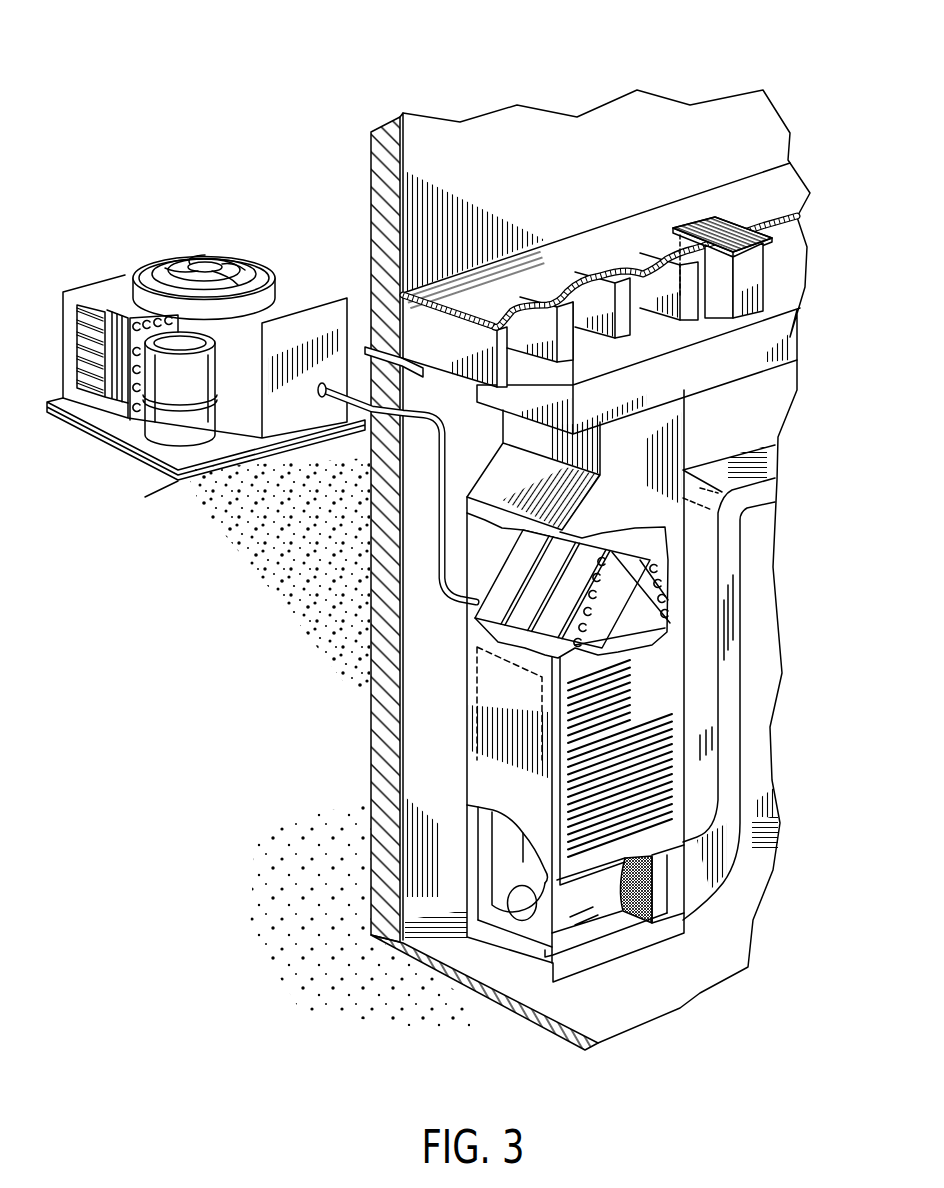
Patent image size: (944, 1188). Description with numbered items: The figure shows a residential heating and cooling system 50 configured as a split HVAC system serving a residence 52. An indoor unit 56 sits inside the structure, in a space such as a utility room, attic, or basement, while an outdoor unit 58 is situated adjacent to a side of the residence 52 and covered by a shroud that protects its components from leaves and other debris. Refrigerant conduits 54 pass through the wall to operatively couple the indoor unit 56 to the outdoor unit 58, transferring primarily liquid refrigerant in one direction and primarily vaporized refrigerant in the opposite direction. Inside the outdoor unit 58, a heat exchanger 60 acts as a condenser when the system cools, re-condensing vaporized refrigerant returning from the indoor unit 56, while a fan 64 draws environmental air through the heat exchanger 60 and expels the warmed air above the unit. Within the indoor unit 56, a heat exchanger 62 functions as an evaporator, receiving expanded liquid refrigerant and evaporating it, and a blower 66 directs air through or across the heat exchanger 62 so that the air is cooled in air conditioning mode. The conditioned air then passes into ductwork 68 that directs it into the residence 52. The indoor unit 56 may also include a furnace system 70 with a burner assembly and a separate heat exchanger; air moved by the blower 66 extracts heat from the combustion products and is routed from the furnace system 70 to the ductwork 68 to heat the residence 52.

The residential heating and cooling system 50 is at (203, 84).
The residence 52 is at (505, 135).
The refrigerant conduits 54 is at (437, 505).
The indoor unit 56 is at (467, 731).
The outdoor unit 58 is at (206, 322).
The heat exchanger 60 is at (138, 322).
The heat exchanger 62 is at (525, 622).
The fan 64 is at (222, 265).
The blower 66 is at (515, 925).
The ductwork 68 is at (747, 300).
The furnace system 70 is at (476, 706).